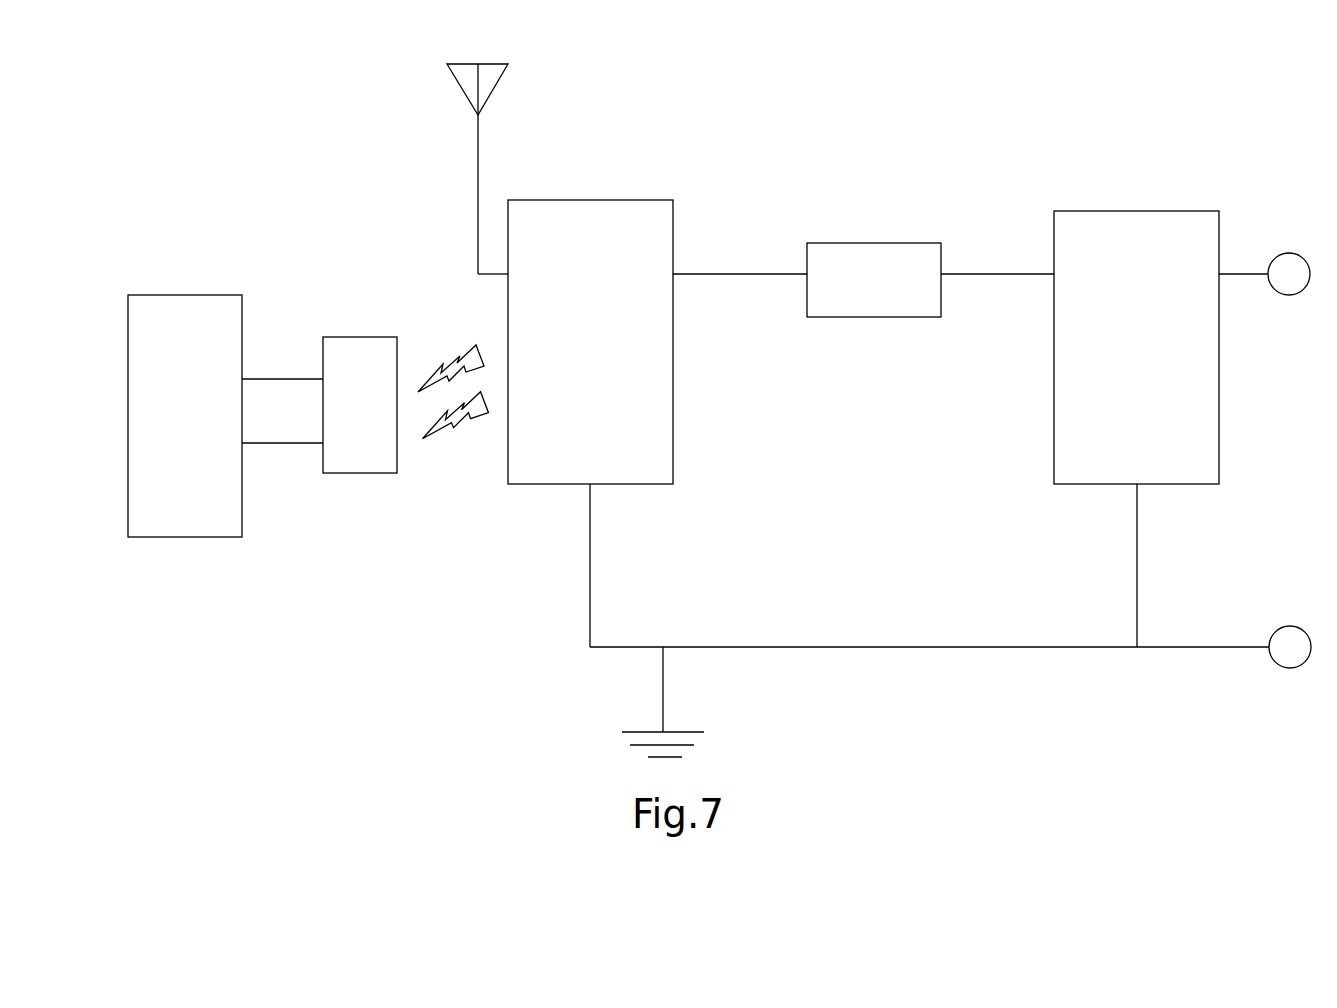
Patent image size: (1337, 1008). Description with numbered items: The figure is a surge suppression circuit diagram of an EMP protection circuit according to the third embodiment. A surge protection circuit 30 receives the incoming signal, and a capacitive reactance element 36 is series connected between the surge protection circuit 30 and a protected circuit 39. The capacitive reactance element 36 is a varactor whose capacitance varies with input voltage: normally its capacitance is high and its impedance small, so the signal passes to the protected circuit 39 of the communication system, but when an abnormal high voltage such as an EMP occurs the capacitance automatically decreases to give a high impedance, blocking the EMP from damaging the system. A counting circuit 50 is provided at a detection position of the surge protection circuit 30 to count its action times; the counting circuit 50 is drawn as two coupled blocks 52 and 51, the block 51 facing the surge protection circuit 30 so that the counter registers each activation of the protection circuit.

The surge protection circuit 30 is at (633, 200).
The capacitive reactance element 36 is at (890, 243).
The protected circuit 39 is at (1137, 190).
The counting circuit 50 is at (254, 404).
The reader antenna 51 is at (360, 473).
The reader control unit 52 is at (188, 537).